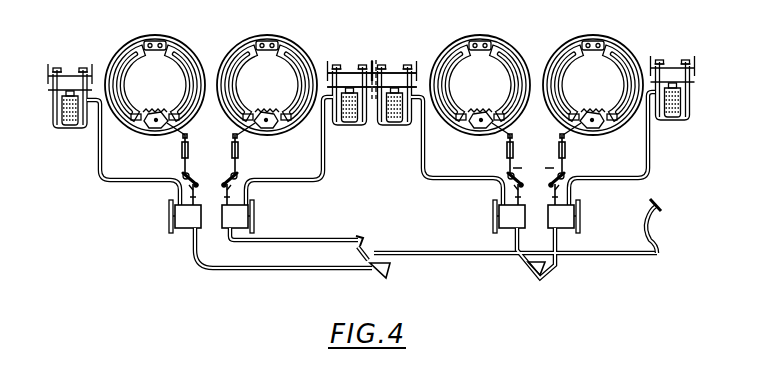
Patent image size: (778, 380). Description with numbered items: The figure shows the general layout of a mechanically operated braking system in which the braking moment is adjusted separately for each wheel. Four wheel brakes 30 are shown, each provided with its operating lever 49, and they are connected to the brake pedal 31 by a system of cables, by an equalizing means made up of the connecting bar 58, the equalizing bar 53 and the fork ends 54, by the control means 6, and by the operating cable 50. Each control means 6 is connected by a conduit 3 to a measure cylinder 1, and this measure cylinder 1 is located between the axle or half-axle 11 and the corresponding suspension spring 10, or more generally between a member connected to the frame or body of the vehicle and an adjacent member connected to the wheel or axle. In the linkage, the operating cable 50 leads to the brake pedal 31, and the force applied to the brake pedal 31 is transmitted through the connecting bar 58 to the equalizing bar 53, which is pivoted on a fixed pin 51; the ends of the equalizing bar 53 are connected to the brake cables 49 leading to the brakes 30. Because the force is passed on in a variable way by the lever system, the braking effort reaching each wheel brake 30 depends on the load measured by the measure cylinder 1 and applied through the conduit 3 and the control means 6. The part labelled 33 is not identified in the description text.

The measure cylinder 1 is at (62, 104).
The conduit 3 is at (99, 174).
The control means 6 is at (169, 219).
The suspension spring 10 is at (72, 125).
The axle or half-axle 11 is at (70, 78).
The wheel brake 30 is at (225, 77).
The brake pedal 31 is at (650, 221).
The link 33 is at (554, 168).
The operating lever 49 is at (182, 156).
The operating cable 50 is at (203, 268).
The fixed pin 51 is at (231, 178).
The equalizing bar 53 is at (189, 173).
The fork ends 54 is at (275, 164).
The connecting bar 58 is at (197, 199).